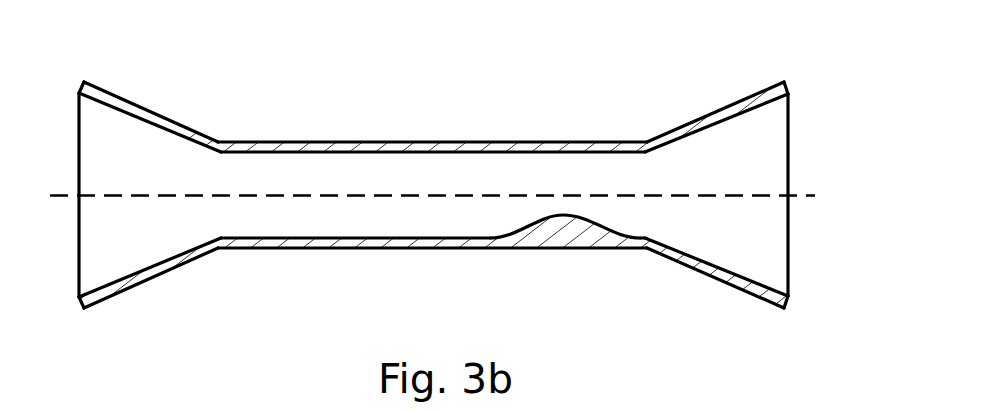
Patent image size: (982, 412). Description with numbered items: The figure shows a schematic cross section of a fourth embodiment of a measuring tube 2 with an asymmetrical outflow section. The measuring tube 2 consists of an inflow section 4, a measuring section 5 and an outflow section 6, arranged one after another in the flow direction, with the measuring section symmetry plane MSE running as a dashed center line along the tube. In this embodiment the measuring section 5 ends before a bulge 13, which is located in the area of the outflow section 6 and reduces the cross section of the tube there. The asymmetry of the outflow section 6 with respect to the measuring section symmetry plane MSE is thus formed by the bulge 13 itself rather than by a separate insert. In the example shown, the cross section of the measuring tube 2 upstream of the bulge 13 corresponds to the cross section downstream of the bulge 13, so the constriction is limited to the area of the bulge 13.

The measuring tube 2 is at (678, 73).
The inflow section 4 is at (132, 140).
The measuring section 5 is at (408, 172).
The outflow section 6 is at (725, 145).
The bulge 13 is at (568, 225).
The measuring section symmetry plane MSE is at (815, 196).